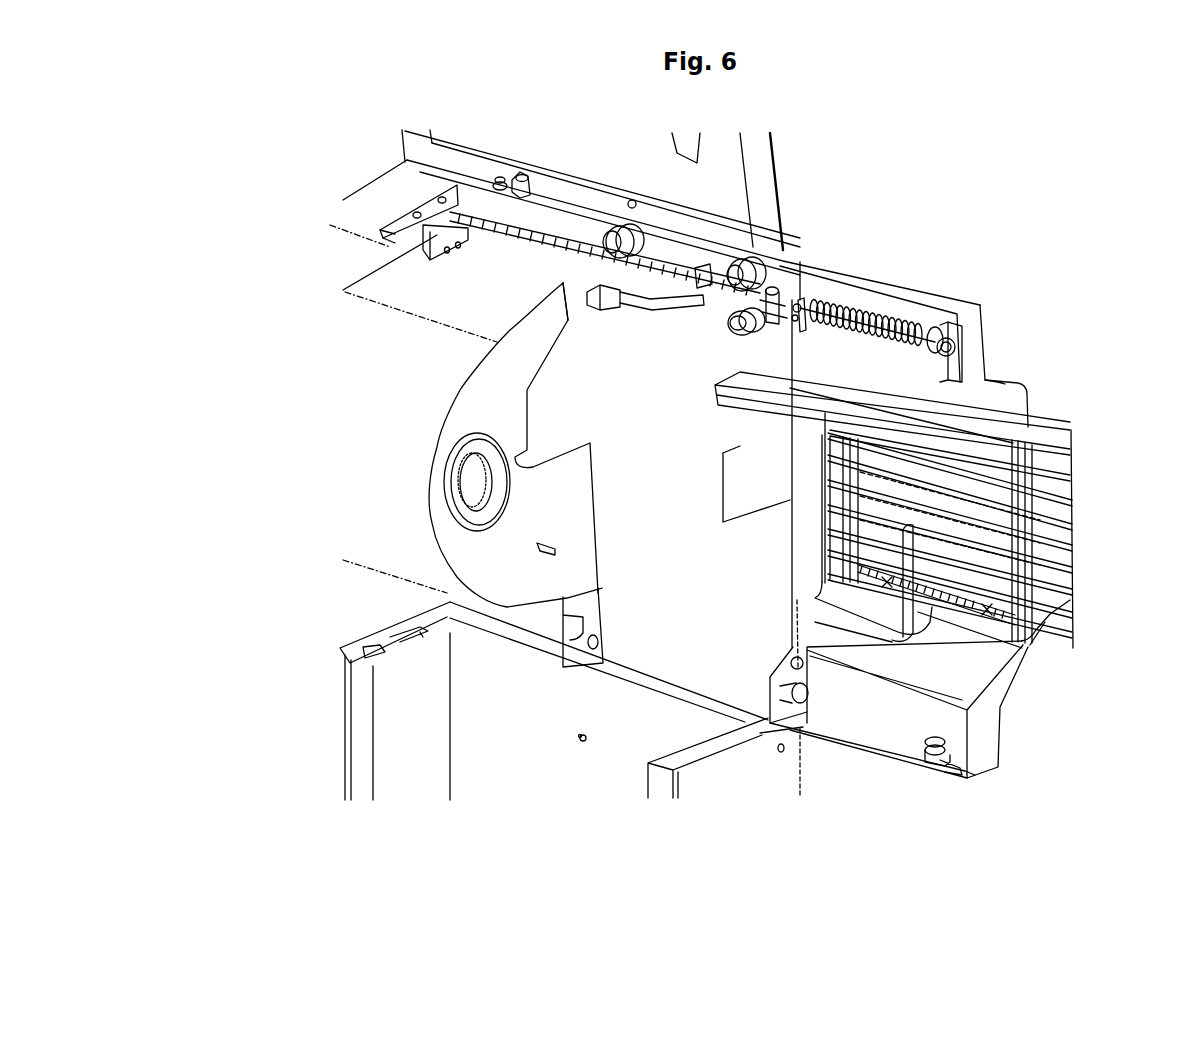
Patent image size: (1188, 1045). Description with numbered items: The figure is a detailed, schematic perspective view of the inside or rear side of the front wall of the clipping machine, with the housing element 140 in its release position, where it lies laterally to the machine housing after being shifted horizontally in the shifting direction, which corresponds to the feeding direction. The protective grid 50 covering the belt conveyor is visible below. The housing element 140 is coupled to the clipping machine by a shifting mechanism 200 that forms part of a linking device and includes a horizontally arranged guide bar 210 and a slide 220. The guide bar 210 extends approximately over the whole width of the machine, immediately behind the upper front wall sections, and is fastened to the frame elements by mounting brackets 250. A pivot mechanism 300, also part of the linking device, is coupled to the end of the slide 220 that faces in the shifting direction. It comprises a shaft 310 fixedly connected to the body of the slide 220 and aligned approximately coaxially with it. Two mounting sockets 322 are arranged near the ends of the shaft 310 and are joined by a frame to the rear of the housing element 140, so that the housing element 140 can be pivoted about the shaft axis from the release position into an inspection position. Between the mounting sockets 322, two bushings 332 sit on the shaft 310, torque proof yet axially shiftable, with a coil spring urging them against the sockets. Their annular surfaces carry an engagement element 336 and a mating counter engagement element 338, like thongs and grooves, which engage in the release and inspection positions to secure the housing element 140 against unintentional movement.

The protective grid 50 is at (1056, 488).
The housing element 140 is at (1018, 666).
The shifting mechanism 200 is at (900, 151).
The guide bar 210 is at (603, 273).
The slide 220 is at (697, 273).
The mounting brackets 250 is at (597, 287).
The pivot mechanism 300 is at (869, 342).
The shaft 310 is at (772, 295).
The mounting sockets 322 is at (940, 347).
The bushings 332 is at (913, 342).
The engagement element 336 is at (937, 347).
The counter engagement element 338 is at (940, 352).